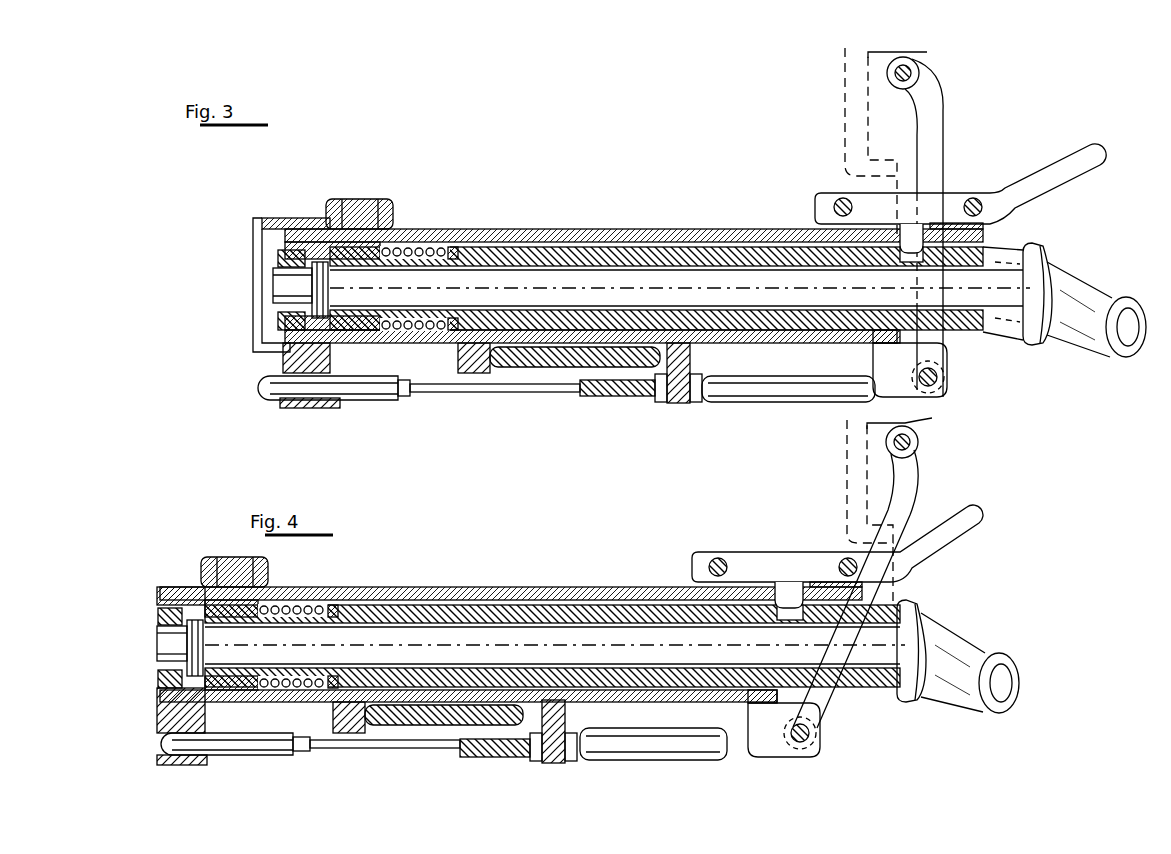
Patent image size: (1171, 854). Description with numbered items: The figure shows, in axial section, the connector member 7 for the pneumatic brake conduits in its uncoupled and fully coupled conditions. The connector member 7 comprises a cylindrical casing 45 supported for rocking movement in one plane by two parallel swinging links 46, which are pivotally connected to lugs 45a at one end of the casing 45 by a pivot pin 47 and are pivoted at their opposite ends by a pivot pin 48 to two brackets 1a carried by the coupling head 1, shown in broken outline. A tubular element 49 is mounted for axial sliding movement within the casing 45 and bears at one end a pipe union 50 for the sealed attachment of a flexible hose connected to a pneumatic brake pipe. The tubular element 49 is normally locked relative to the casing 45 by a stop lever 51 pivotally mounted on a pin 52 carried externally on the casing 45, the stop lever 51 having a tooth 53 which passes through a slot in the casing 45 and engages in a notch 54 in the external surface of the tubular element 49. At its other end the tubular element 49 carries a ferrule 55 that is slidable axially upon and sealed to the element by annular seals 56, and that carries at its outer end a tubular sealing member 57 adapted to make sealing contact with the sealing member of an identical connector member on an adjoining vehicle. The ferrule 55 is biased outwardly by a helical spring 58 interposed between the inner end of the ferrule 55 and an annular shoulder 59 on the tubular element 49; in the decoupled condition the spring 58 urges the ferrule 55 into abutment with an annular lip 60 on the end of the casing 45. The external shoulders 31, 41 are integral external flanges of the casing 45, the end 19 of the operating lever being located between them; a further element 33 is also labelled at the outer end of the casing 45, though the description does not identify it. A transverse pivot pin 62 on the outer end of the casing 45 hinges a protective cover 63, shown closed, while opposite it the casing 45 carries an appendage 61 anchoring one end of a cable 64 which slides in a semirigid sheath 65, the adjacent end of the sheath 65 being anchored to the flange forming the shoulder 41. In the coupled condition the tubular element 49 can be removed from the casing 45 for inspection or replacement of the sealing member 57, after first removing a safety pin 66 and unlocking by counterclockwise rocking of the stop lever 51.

In FIG. 3, the coupling head 1 is at (843, 82).
In FIG. 4, the coupling head 1 is at (843, 452).
In FIG. 3, the brackets 1a is at (910, 49).
In FIG. 4, the brackets 1a is at (912, 418).
In FIG. 3, the connector member 7 is at (501, 226).
In FIG. 4, the connector member 7 is at (411, 587).
In FIG. 3, the end of the operating lever 19 is at (527, 370).
In FIG. 4, the end of the operating lever 19 is at (392, 705).
In FIG. 3, the external shoulder 31 is at (470, 373).
In FIG. 4, the external shoulder 31 is at (348, 708).
In FIG. 3, the end plate 33 is at (283, 233).
In FIG. 4, the end plate 33 is at (160, 592).
In FIG. 3, the external shoulder 41 is at (678, 404).
In FIG. 4, the external shoulder 41 is at (567, 721).
In FIG. 3, the cylindrical casing 45 is at (595, 229).
In FIG. 4, the cylindrical casing 45 is at (540, 587).
In FIG. 3, the lugs 45a is at (873, 361).
In FIG. 4, the lugs 45a is at (748, 716).
In FIG. 3, the swinging links 46 is at (943, 112).
In FIG. 4, the swinging links 46 is at (915, 481).
In FIG. 3, the pivot pin 47 is at (940, 369).
In FIG. 4, the pivot pin 47 is at (815, 728).
In FIG. 3, the pivot pin 48 is at (912, 72).
In FIG. 4, the pivot pin 48 is at (916, 444).
In FIG. 3, the tubular element 49 is at (544, 257).
In FIG. 4, the tubular element 49 is at (486, 613).
In FIG. 3, the pipe union 50 is at (1090, 290).
In FIG. 4, the pipe union 50 is at (968, 640).
In FIG. 3, the stop lever 51 is at (1040, 178).
In FIG. 4, the stop lever 51 is at (980, 515).
In FIG. 3, the pin 52 is at (838, 199).
In FIG. 4, the pin 52 is at (716, 557).
In FIG. 3, the tooth 53 is at (917, 246).
In FIG. 4, the tooth 53 is at (780, 600).
In FIG. 3, the notch 54 is at (921, 262).
In FIG. 4, the notch 54 is at (840, 638).
In FIG. 3, the ferrule 55 is at (330, 248).
In FIG. 4, the ferrule 55 is at (205, 605).
In FIG. 3, the annular seals 56 is at (348, 261).
In FIG. 4, the annular seals 56 is at (216, 618).
In FIG. 3, the tubular sealing member 57 is at (268, 311).
In FIG. 4, the tubular sealing member 57 is at (154, 620).
In FIG. 3, the helical spring 58 is at (412, 247).
In FIG. 4, the helical spring 58 is at (290, 605).
In FIG. 3, the annular shoulder 59 is at (450, 247).
In FIG. 4, the annular shoulder 59 is at (334, 605).
In FIG. 3, the annular lip 60 is at (278, 256).
In FIG. 4, the annular lip 60 is at (160, 688).
In FIG. 3, the appendage 61 is at (300, 362).
In FIG. 4, the appendage 61 is at (157, 712).
In FIG. 3, the transverse pivot pin 62 is at (360, 200).
In FIG. 4, the transverse pivot pin 62 is at (225, 575).
In FIG. 3, the protective cover 63 is at (253, 271).
In FIG. 3, the cable 64 is at (490, 387).
In FIG. 4, the cable 64 is at (240, 742).
In FIG. 3, the semirigid sheath 65 is at (770, 399).
In FIG. 4, the semirigid sheath 65 is at (642, 738).
In FIG. 3, the safety pin 66 is at (985, 212).
In FIG. 4, the safety pin 66 is at (845, 558).